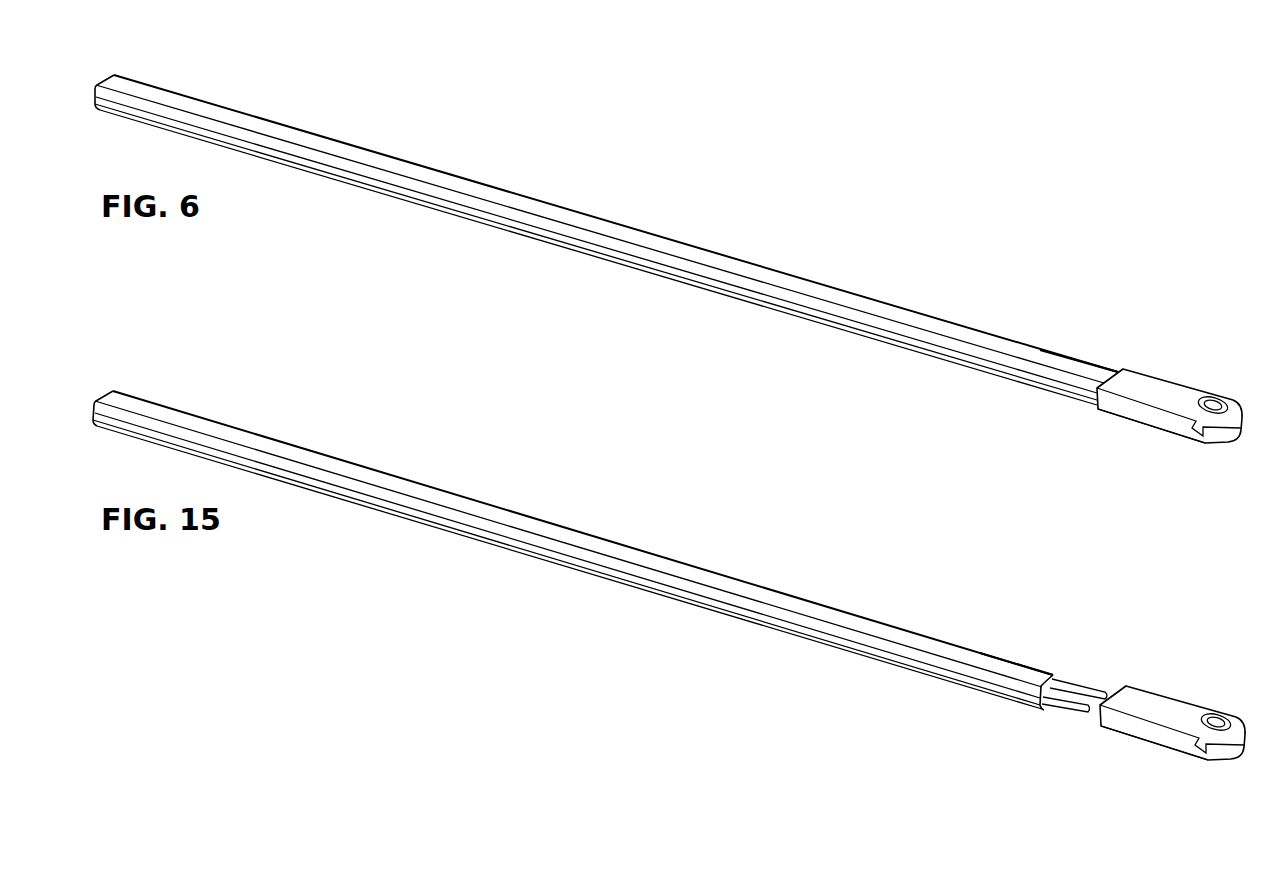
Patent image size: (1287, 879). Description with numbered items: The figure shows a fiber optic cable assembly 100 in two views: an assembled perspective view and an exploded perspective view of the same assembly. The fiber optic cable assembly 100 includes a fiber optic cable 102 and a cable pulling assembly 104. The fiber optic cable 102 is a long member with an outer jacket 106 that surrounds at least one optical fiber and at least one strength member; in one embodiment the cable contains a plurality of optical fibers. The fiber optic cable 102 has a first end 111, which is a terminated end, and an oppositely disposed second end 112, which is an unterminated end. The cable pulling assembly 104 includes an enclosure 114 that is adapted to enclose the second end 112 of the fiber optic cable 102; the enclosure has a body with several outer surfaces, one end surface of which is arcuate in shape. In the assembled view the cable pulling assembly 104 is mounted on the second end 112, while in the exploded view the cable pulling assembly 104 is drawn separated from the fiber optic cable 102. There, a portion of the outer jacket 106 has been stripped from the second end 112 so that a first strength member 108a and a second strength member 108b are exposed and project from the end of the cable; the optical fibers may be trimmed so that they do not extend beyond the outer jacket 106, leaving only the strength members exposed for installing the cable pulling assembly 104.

In FIG. 6, the fiber optic cable assembly 100 is at (449, 127).
In FIG. 15, the fiber optic cable assembly 100 is at (428, 408).
In FIG. 6, the fiber optic cable 102 is at (574, 203).
In FIG. 15, the fiber optic cable 102 is at (665, 548).
In FIG. 6, the cable pulling assembly 104 is at (1187, 375).
In FIG. 15, the cable pulling assembly 104 is at (1190, 688).
In FIG. 6, the outer jacket 106 is at (628, 237).
In FIG. 15, the outer jacket 106 is at (490, 520).
In FIG. 15, the first strength member 108a is at (1065, 700).
In FIG. 15, the second strength member 108b is at (1087, 688).
In FIG. 6, the first end 111 is at (163, 92).
In FIG. 15, the first end 111 is at (127, 403).
In FIG. 6, the second end 112 is at (1075, 396).
In FIG. 15, the second end 112 is at (1017, 665).
In FIG. 6, the enclosure 114 is at (1140, 437).
In FIG. 15, the enclosure 114 is at (1140, 746).